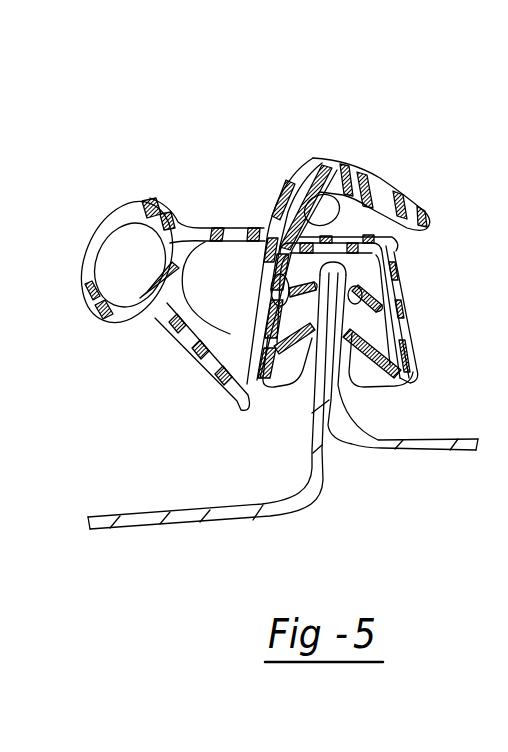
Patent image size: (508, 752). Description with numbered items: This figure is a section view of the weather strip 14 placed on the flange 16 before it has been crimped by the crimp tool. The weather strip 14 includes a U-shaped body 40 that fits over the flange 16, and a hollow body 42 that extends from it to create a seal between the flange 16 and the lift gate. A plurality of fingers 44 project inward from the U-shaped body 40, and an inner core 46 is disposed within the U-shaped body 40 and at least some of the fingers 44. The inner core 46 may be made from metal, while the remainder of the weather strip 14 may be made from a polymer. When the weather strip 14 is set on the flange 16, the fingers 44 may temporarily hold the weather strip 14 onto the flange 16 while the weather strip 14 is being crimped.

The weather strip 14 is at (311, 145).
The flange 16 is at (310, 413).
The U-shaped body 40 is at (355, 243).
The hollow body 42 is at (222, 226).
The fingers 44 is at (271, 290).
The inner core 46 is at (400, 343).